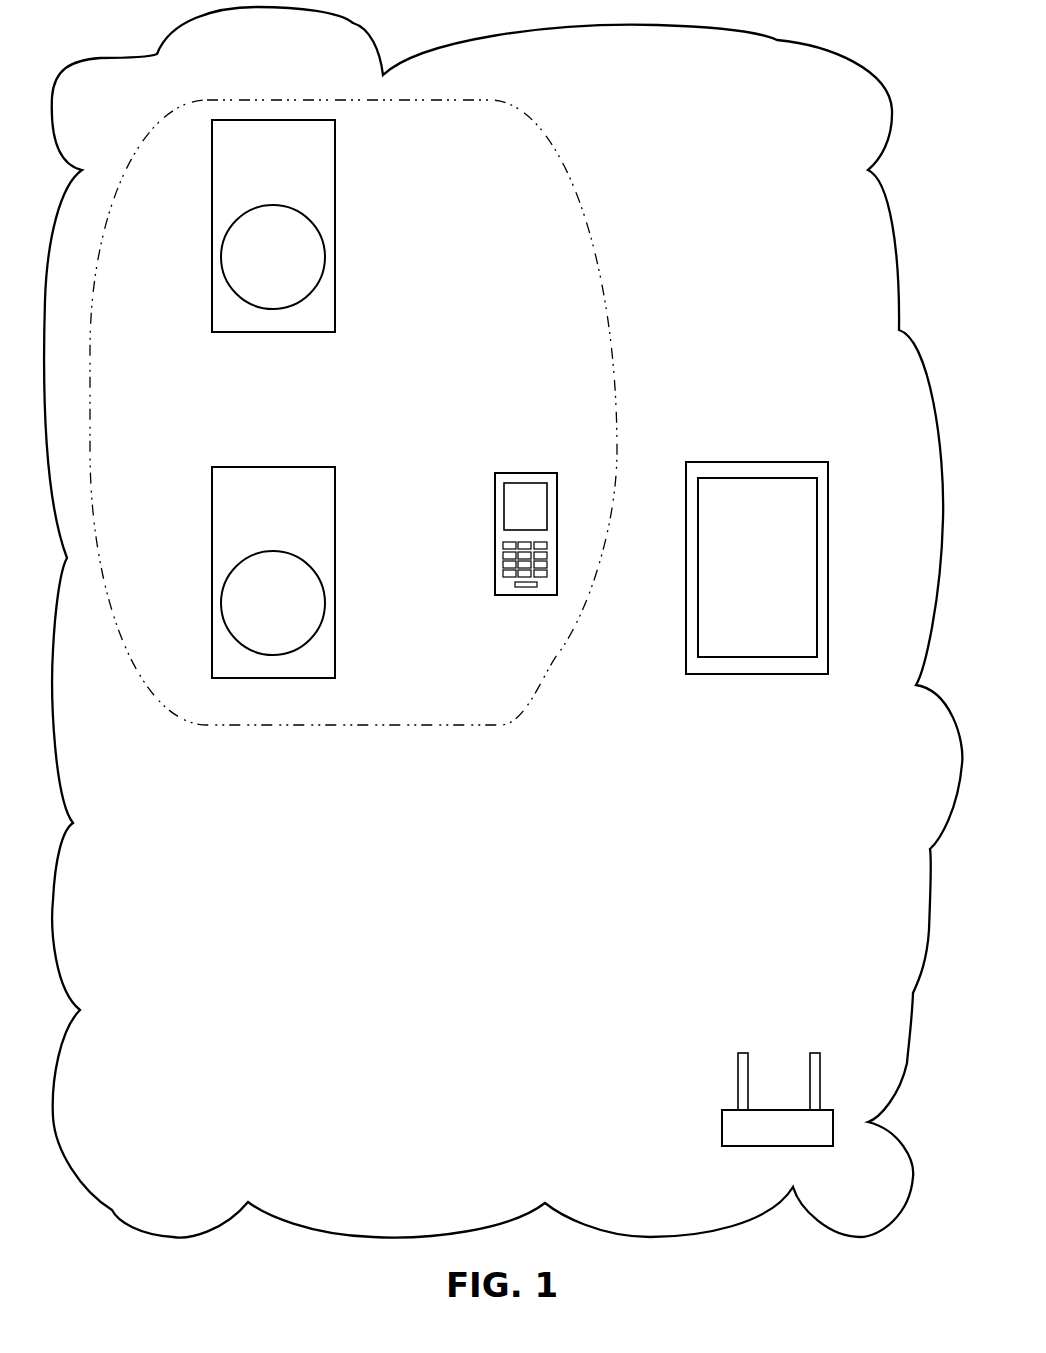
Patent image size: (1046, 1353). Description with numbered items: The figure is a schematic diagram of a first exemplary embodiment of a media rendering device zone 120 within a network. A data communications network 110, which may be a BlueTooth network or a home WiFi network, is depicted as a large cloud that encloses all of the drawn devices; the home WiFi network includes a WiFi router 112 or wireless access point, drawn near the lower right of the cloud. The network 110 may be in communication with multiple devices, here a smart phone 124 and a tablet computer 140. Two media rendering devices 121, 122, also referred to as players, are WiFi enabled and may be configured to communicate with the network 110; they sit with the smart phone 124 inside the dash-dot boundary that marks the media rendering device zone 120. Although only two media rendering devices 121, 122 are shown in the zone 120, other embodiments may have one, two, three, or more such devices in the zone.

The data communications network 110 is at (414, 1211).
The WiFi router 112 is at (777, 1099).
The media rendering device zone 120 is at (352, 727).
The media rendering device 121 is at (254, 493).
The media rendering device 122 is at (254, 146).
The smart phone 124 is at (495, 592).
The tablet computer 140 is at (738, 578).